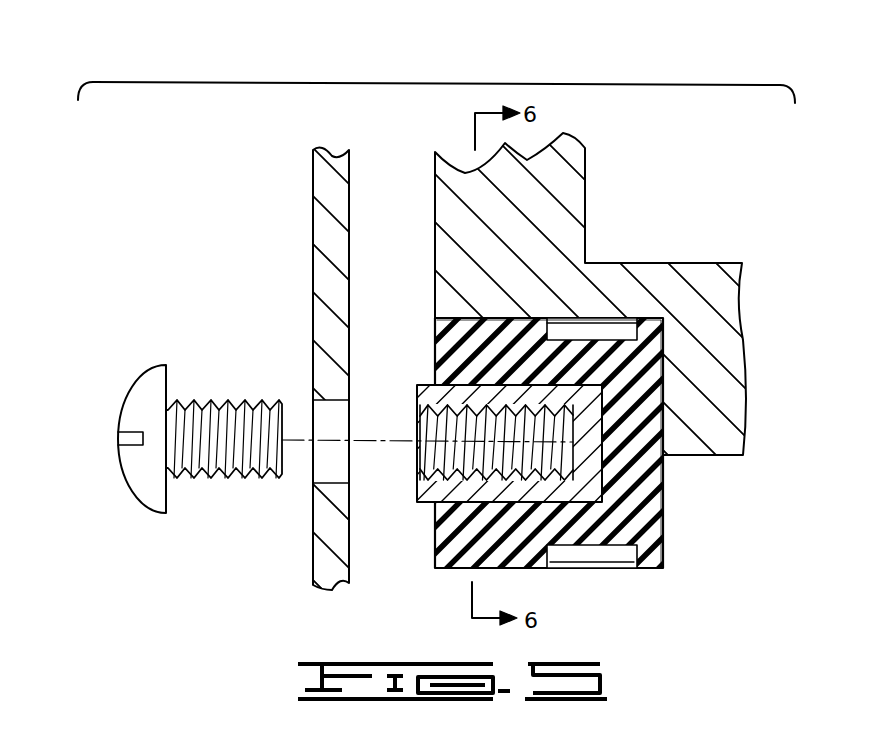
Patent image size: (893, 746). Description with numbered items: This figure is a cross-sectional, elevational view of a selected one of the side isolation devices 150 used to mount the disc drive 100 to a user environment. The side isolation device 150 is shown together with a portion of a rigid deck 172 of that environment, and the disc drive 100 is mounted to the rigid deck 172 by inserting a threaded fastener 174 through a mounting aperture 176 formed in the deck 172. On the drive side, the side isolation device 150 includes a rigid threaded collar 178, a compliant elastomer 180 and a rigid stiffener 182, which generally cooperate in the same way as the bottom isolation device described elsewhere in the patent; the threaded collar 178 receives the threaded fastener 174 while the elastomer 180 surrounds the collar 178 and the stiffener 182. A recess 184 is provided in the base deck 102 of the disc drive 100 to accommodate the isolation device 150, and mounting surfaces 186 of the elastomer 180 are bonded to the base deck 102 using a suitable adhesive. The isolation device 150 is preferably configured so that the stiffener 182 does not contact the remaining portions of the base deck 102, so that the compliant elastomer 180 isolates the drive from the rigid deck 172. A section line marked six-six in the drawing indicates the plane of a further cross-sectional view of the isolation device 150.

The disc drive 100 is at (163, 60).
The base deck 102 is at (565, 185).
The side isolation device 150 is at (624, 585).
The rigid deck 172 is at (322, 214).
The threaded fastener 174 is at (148, 392).
The mounting aperture 176 is at (313, 400).
The rigid threaded collar 178 is at (417, 500).
The compliant elastomer 180 is at (647, 481).
The rigid stiffener 182 is at (573, 565).
The recess 184 is at (601, 308).
The mounting surfaces 186 is at (498, 310).